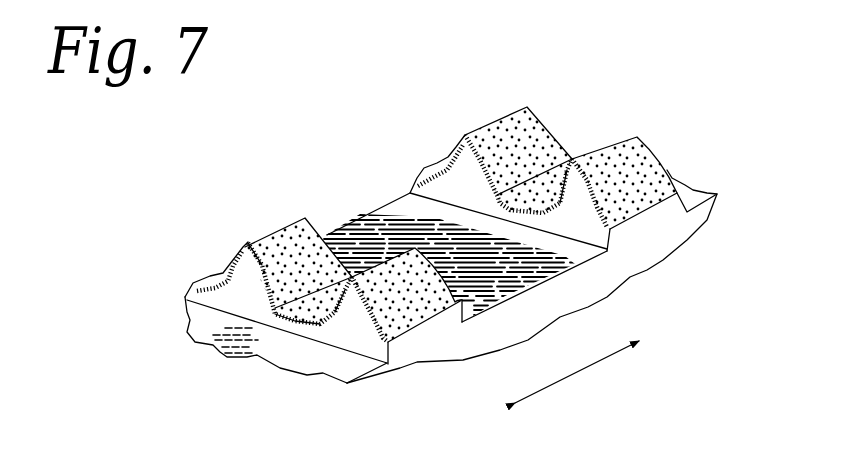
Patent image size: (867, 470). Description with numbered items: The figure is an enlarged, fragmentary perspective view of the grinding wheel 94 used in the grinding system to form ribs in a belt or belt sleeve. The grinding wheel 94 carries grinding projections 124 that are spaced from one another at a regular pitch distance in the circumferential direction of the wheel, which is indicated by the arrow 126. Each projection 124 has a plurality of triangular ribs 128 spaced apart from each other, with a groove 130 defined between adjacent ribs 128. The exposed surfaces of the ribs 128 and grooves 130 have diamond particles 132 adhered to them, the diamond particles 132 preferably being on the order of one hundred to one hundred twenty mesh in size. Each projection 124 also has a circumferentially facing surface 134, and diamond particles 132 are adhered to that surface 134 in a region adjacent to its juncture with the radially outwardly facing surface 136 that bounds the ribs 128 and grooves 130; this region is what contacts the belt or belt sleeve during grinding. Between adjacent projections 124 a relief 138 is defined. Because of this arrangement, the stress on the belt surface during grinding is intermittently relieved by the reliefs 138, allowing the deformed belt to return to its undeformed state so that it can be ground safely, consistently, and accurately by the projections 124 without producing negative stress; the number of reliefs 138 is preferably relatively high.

The grinding wheel 94 is at (531, 92).
The grinding projection 124 is at (290, 214).
The triangular rib 128 is at (256, 236).
The groove 130 is at (573, 156).
The diamond particles 132 is at (313, 322).
The circumferentially facing surface 134 is at (360, 325).
The radially outwardly facing surface 136 is at (352, 277).
The relief 138 is at (560, 270).
The arrow indicating circumferential direction 126 is at (578, 373).